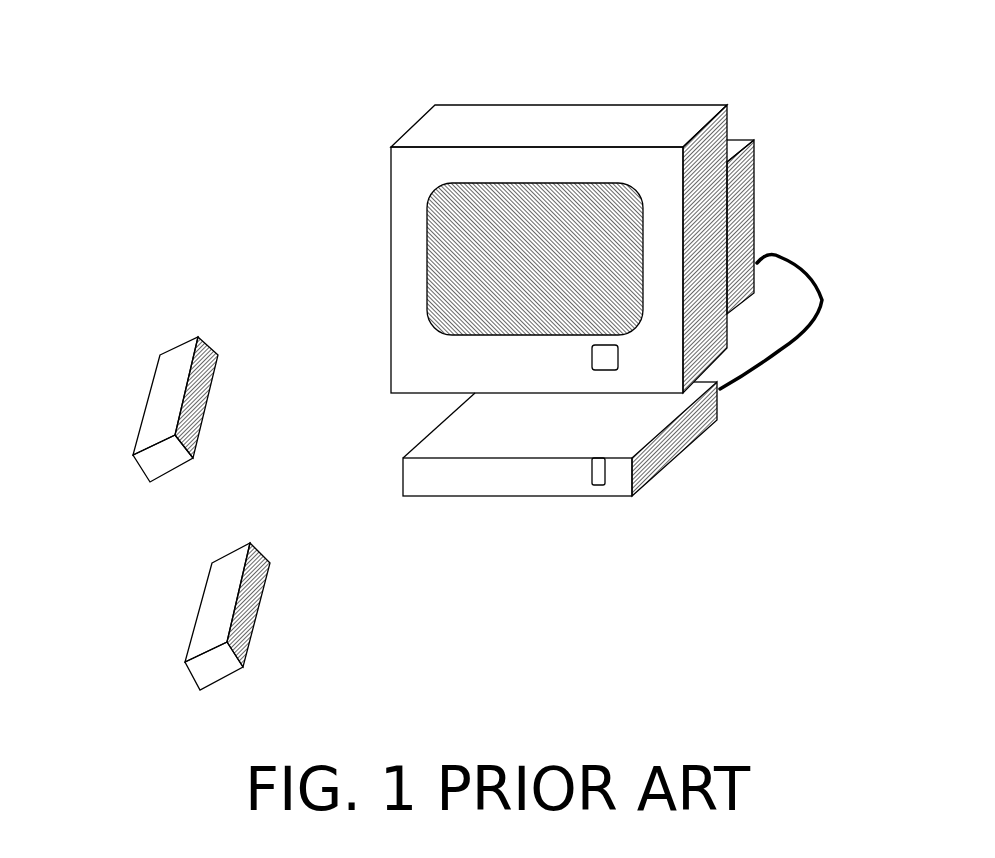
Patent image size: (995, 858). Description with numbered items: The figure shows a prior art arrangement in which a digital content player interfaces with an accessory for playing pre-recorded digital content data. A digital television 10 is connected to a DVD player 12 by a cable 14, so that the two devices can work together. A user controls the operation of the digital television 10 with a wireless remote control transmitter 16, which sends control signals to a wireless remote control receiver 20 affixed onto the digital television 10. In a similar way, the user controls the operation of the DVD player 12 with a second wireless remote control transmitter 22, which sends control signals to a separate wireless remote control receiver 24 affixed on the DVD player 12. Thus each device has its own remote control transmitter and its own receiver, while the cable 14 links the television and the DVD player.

The digital television 10 is at (688, 70).
The DVD player 12 is at (688, 493).
The cable 14 is at (800, 371).
The wireless remote control transmitter 16 is at (177, 380).
The wireless remote control receiver 20 is at (597, 358).
The second wireless remote control transmitter 22 is at (215, 598).
The wireless remote control receiver 24 is at (590, 474).